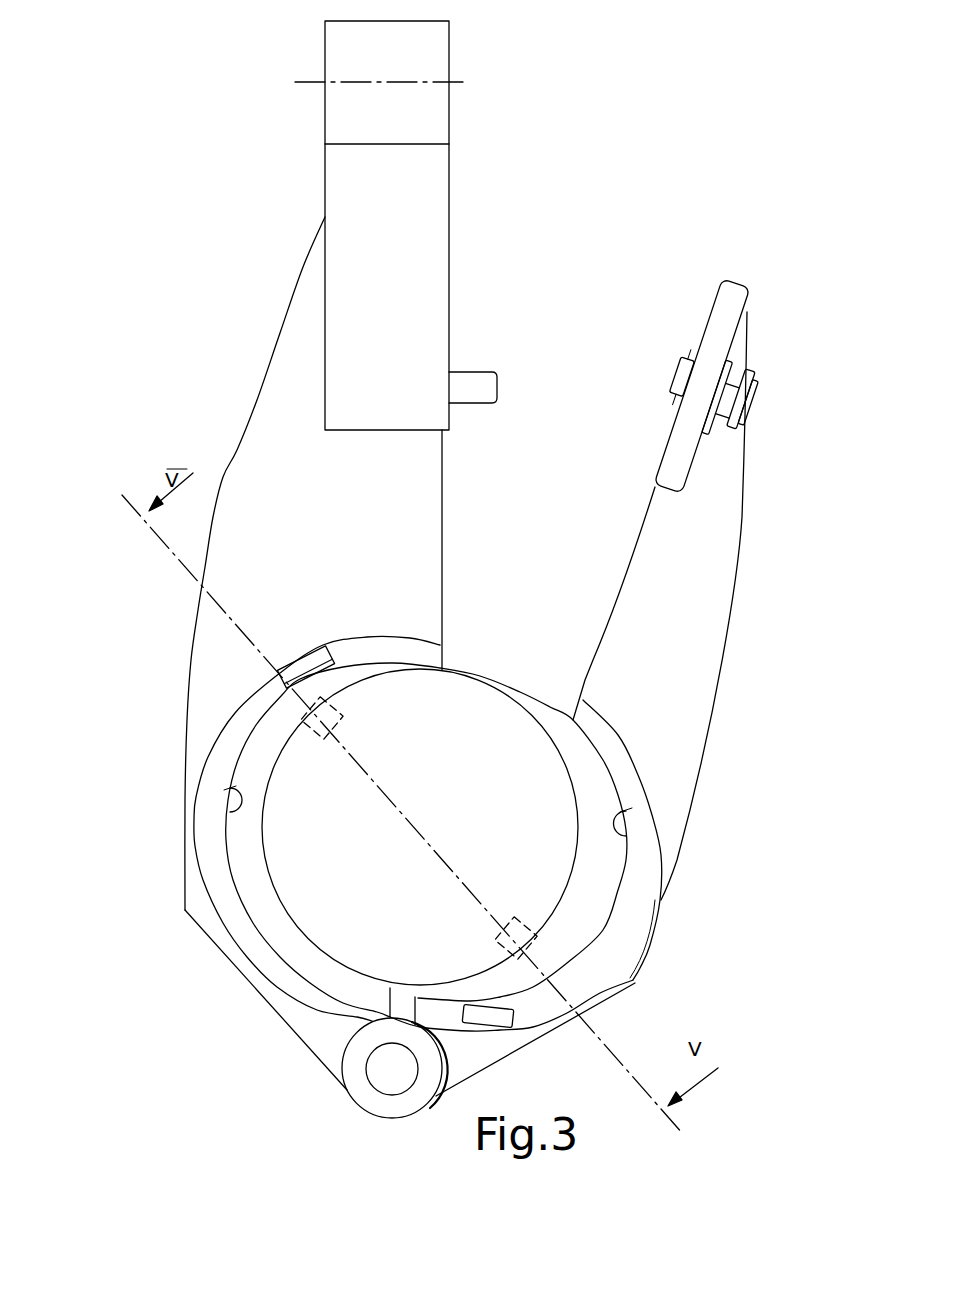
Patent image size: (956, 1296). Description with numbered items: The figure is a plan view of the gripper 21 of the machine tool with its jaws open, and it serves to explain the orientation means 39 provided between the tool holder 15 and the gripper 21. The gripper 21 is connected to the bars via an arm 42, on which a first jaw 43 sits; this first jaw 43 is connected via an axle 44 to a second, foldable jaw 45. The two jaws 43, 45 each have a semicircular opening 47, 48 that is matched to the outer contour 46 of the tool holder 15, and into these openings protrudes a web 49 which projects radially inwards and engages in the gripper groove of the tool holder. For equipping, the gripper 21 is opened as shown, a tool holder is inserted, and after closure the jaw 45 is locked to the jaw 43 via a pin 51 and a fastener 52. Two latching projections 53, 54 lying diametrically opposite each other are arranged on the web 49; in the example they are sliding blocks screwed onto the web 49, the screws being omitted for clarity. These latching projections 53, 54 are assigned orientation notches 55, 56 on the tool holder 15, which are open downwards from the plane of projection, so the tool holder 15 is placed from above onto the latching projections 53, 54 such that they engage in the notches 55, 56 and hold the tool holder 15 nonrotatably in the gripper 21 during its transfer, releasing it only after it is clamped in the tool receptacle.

The gripper 21 is at (182, 295).
The arm 42 is at (420, 210).
The fastener 52 is at (725, 322).
The pin 51 is at (471, 358).
The orientation means 39 is at (341, 615).
The tool holder 15 is at (445, 709).
The outer contour of the tool holder 46 is at (487, 682).
The second, foldable jaw 45 is at (680, 705).
The first jaw 43 is at (258, 568).
The latching projection 53 is at (282, 672).
The orientation notch 55 is at (297, 728).
The orientation notch 56 is at (543, 943).
The latching projection 54 is at (498, 1015).
The semicircular opening 47 is at (225, 812).
The semicircular opening 48 is at (620, 835).
The web 49 is at (222, 878).
The axle 44 is at (366, 1085).